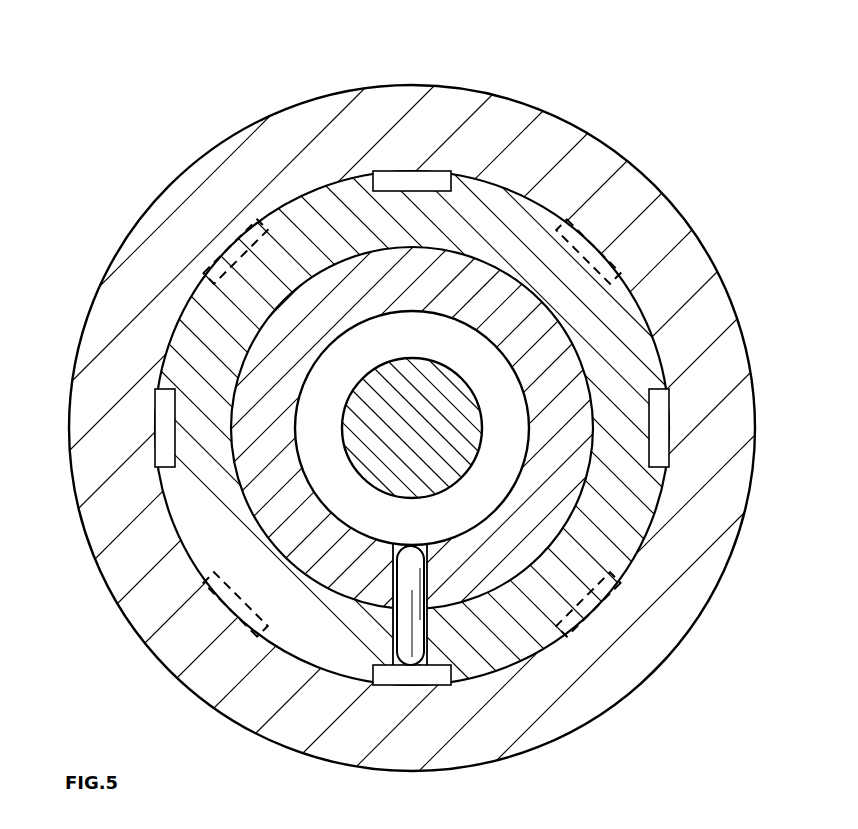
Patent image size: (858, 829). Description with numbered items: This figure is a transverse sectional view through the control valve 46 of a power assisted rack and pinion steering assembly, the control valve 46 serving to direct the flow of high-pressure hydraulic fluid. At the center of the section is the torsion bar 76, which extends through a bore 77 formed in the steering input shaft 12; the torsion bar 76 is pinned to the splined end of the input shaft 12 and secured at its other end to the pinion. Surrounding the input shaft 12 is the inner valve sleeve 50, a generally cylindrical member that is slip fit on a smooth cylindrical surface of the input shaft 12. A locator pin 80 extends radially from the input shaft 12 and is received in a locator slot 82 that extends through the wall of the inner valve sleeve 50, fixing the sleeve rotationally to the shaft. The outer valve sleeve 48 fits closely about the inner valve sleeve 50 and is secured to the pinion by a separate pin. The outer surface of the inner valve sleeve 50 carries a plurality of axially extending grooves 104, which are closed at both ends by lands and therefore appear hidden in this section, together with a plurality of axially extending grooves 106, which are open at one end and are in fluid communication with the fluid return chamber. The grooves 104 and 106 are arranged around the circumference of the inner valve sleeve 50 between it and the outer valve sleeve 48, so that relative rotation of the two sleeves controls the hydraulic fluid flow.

The control valve 46 is at (152, 132).
The outer valve sleeve 48 is at (710, 317).
The inner valve sleeve 50 is at (613, 508).
The steering input shaft 12 is at (525, 513).
The torsion bar 76 is at (395, 392).
The bore 77 is at (369, 516).
The locator pin 80 is at (407, 617).
The locator slot 82 is at (402, 633).
The axially extending grooves 104 is at (227, 253).
The axially extending grooves 106 is at (398, 180).